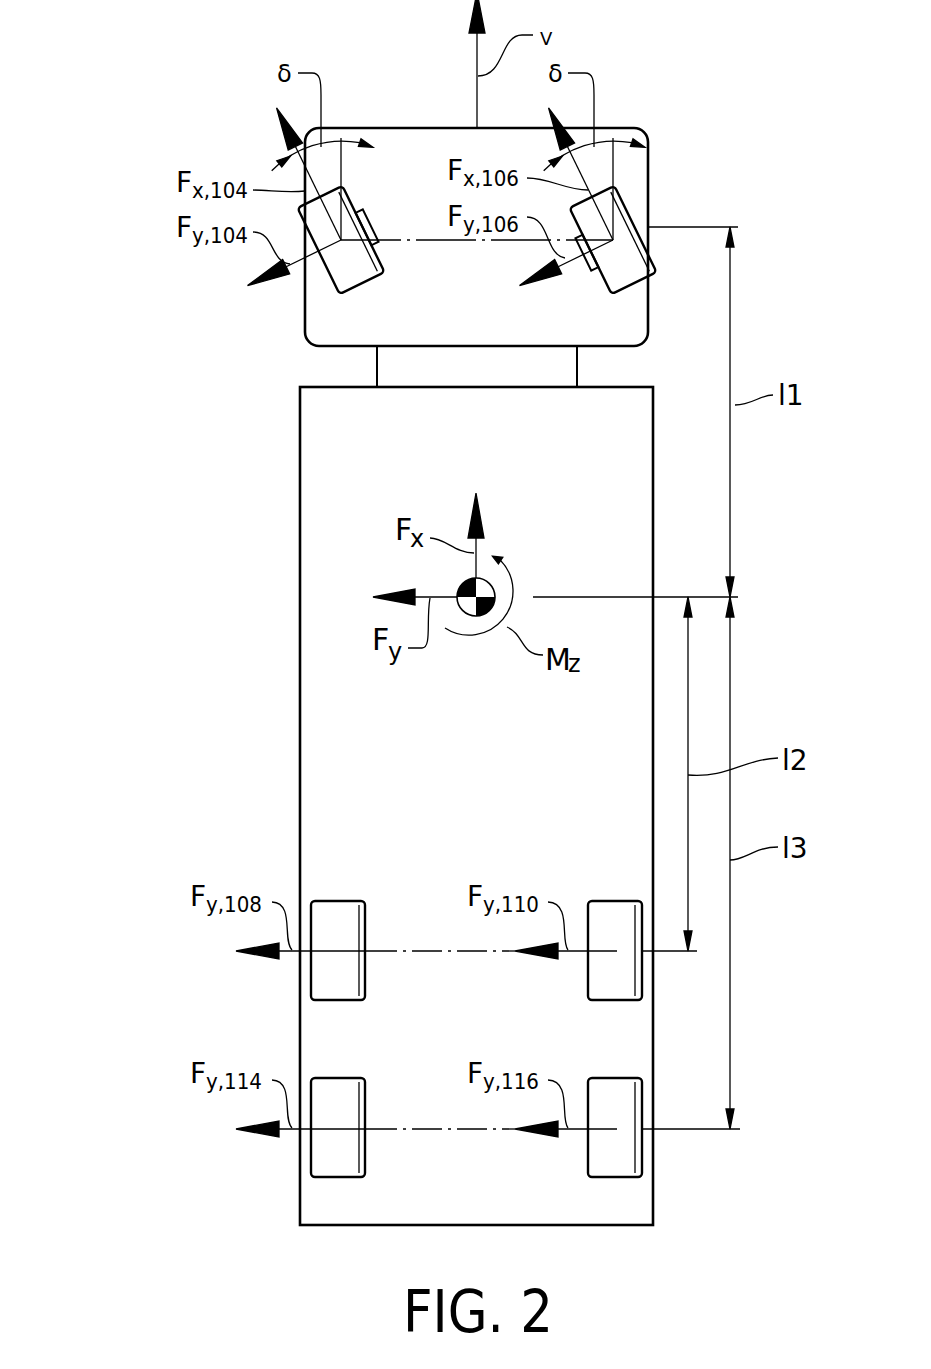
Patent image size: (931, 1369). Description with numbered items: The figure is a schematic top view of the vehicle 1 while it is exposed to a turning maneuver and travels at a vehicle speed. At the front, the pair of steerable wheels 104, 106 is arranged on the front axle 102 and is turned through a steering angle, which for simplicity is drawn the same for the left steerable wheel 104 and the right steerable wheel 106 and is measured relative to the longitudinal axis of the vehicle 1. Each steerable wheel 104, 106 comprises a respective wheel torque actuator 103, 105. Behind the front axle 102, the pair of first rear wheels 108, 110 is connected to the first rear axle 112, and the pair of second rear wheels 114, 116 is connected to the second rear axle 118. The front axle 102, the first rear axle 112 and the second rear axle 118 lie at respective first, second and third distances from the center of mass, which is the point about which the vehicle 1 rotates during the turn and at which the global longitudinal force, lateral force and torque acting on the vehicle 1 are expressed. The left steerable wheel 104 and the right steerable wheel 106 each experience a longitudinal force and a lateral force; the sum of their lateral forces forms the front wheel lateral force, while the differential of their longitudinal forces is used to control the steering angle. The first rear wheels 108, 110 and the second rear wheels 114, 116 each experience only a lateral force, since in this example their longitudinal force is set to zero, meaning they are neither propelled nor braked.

The vehicle 1 is at (119, 364).
The front axle 102 is at (512, 243).
The wheel torque actuator 103 is at (382, 222).
The steerable wheel 104 is at (327, 277).
The wheel torque actuator 105 is at (577, 262).
The steerable wheel 106 is at (630, 205).
The first rear wheel 108 is at (311, 973).
The first rear wheel 110 is at (643, 973).
The first rear axle 112 is at (480, 951).
The second rear wheel 114 is at (311, 1150).
The second rear wheel 116 is at (643, 1150).
The second rear axle 118 is at (480, 1129).